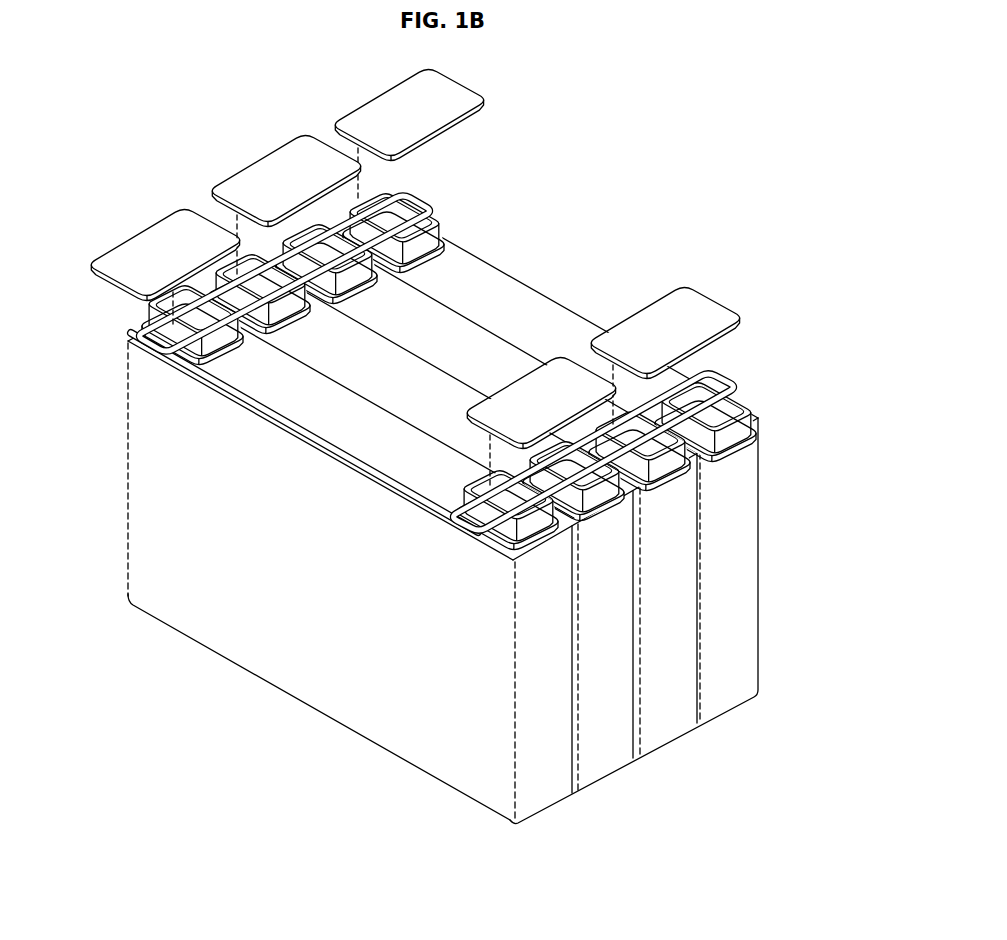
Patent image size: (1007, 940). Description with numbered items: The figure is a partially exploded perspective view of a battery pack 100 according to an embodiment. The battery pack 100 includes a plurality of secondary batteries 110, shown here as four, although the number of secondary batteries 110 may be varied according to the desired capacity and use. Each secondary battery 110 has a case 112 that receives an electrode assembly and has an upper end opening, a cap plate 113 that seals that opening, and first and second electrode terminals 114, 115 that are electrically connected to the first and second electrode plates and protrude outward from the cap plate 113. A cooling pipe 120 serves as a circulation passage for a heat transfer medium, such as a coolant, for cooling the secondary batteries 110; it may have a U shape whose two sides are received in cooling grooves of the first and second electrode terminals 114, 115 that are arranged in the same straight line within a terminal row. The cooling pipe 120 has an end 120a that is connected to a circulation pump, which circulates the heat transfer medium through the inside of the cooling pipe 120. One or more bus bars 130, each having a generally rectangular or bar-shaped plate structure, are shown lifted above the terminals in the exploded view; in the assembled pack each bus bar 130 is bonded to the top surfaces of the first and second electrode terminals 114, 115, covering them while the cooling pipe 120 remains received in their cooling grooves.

The battery pack 100 is at (781, 102).
The secondary battery 110 is at (604, 760).
The case 112 is at (300, 688).
The cap plate 113 is at (450, 333).
The first electrode terminal 114 is at (662, 458).
The second electrode terminal 115 is at (353, 290).
The cooling pipe 120 is at (417, 191).
The end of the cooling pipe 120a is at (127, 332).
The bus bar 130 is at (253, 175).